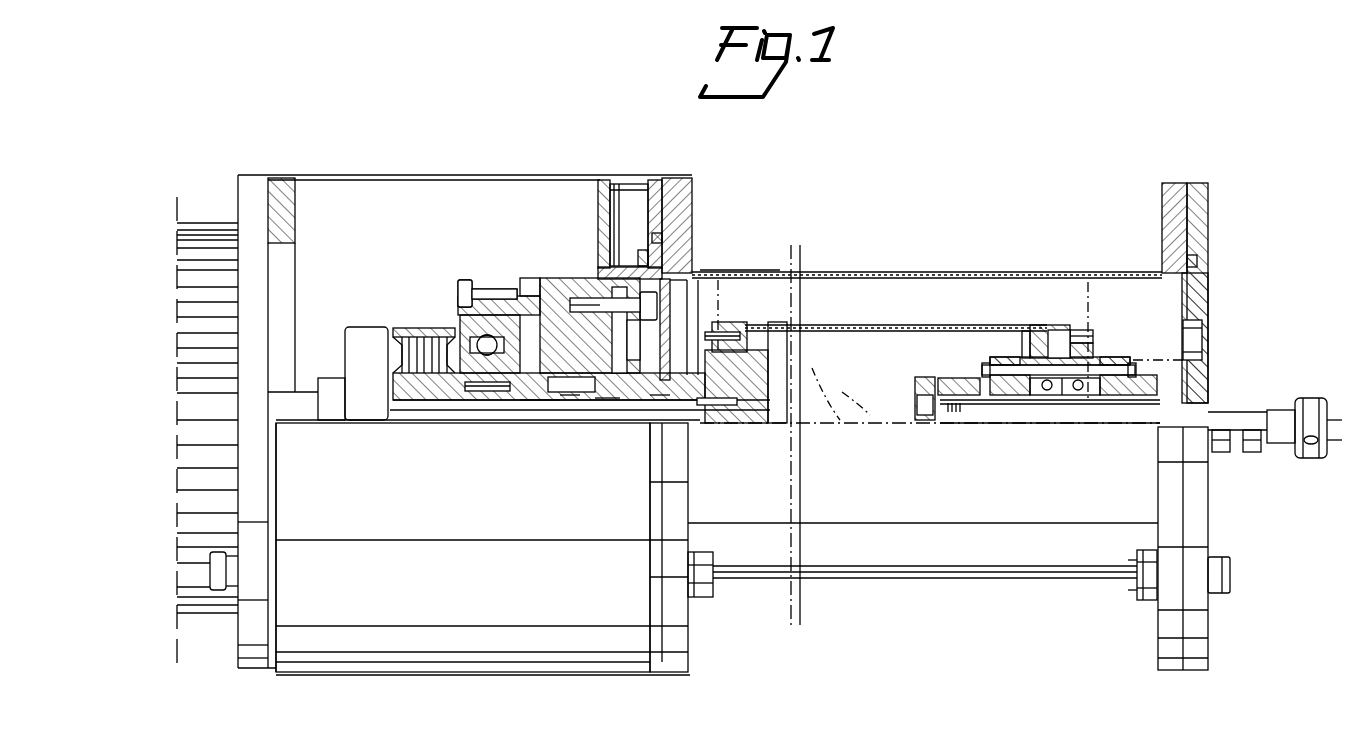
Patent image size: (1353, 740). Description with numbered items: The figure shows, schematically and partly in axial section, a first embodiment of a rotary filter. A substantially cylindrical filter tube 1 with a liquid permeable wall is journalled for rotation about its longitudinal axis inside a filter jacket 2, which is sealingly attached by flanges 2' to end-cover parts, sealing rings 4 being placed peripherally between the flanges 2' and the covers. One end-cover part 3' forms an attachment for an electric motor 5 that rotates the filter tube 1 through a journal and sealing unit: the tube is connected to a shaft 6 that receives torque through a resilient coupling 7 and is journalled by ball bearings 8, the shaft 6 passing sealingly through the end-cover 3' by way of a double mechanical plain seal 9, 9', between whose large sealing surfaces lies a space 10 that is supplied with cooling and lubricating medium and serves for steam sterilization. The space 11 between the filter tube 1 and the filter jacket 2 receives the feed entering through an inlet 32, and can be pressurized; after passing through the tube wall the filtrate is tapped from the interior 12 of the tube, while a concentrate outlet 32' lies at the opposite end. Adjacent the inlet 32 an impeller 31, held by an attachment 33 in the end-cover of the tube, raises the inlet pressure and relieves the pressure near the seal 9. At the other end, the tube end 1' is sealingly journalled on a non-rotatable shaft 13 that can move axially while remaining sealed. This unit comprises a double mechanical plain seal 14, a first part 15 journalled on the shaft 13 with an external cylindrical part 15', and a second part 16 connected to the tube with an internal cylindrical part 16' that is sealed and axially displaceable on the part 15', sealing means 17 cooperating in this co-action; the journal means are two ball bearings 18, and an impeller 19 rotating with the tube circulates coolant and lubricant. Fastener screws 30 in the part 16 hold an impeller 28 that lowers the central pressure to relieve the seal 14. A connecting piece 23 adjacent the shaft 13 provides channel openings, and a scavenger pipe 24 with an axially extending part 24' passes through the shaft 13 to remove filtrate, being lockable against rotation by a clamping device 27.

The filter tube 1 is at (896, 278).
The end of the filter tube 1' is at (1011, 326).
The filter jacket 2 is at (927, 252).
The flanges 2' is at (924, 207).
The end-cover part 3' is at (634, 261).
The sealing rings 4 is at (672, 238).
The electric motor 5 is at (200, 612).
The shaft 6 is at (546, 400).
The resilient coupling 7 is at (350, 375).
The ball bearings 8 is at (460, 330).
The double mechanical plain seal 9 is at (615, 427).
The seal 9' is at (615, 425).
The space 10 is at (590, 287).
The space 11 is at (900, 288).
The interior of the tube 12 is at (832, 451).
The non-rotatable shaft 13 is at (1050, 429).
The double mechanical plain seal 14 is at (975, 410).
The first part 15 is at (1123, 348).
The external cylindrical part 15' is at (991, 349).
The second part 16 is at (1054, 321).
The internal cylindrical part 16' is at (1063, 321).
The sealing means 17 is at (1025, 360).
The ball bearings 18 is at (1040, 405).
The impeller 19 is at (1060, 405).
The connecting piece 23 is at (1207, 402).
The scavenger pipe 24 is at (844, 394).
The axially extending part of the scavenger pipe 24' is at (943, 430).
The clamping device 27 is at (1237, 440).
The impeller 28 is at (1146, 298).
The fastener screws 30 is at (1088, 330).
The impeller 31 is at (756, 270).
The inlet 32 is at (642, 225).
The concentrate outlet 32' is at (1220, 323).
The attachment 33 is at (738, 330).